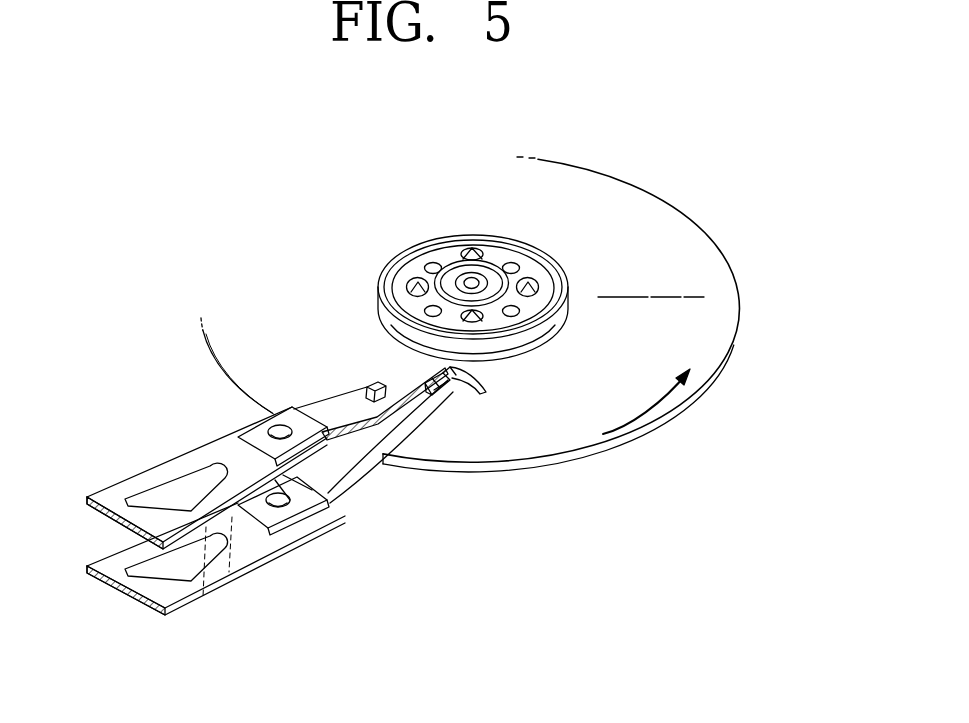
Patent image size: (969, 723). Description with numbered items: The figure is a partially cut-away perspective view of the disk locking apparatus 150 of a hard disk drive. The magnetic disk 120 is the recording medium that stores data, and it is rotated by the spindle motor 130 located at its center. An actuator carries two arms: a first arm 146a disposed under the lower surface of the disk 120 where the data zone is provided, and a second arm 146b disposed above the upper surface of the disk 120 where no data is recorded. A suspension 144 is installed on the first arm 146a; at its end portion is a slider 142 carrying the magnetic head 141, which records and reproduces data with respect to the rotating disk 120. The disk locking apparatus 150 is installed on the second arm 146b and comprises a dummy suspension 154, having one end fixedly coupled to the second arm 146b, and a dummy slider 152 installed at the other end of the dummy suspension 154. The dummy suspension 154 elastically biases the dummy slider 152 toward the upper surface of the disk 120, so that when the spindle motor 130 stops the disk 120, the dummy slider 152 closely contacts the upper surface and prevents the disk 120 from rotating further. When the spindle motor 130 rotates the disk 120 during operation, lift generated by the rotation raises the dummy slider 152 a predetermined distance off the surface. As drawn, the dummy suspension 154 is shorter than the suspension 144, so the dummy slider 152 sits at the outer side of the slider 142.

The magnetic disk 120 is at (697, 247).
The spindle motor 130 is at (494, 255).
The magnetic head 141 is at (453, 367).
The slider 142 is at (458, 373).
The suspension 144 is at (366, 443).
The first arm 146a is at (163, 592).
The second arm 146b is at (108, 497).
The disk locking apparatus 150 is at (343, 413).
The dummy slider 152 is at (372, 392).
The dummy suspension 154 is at (320, 408).